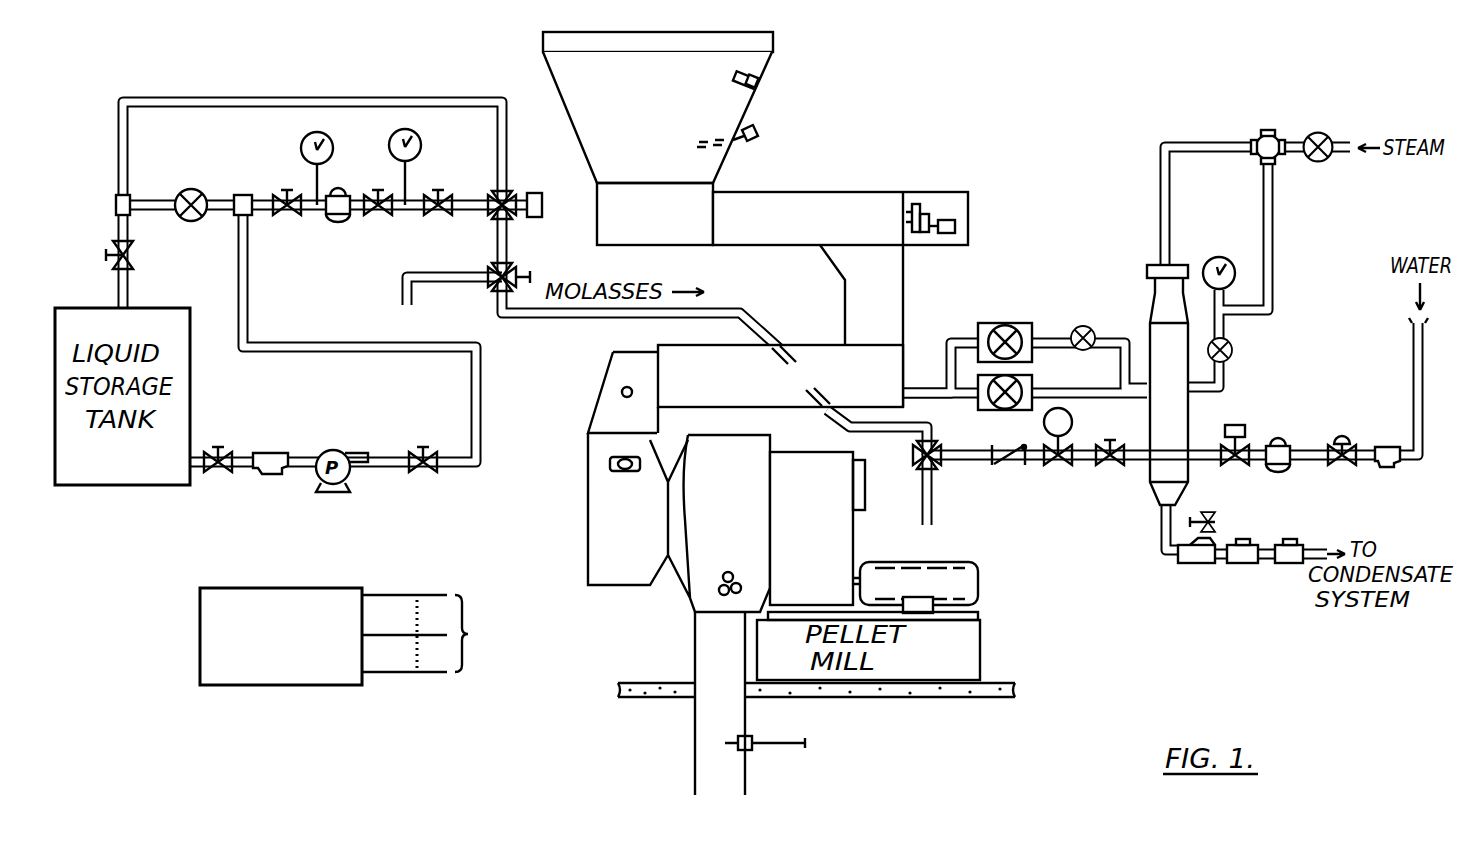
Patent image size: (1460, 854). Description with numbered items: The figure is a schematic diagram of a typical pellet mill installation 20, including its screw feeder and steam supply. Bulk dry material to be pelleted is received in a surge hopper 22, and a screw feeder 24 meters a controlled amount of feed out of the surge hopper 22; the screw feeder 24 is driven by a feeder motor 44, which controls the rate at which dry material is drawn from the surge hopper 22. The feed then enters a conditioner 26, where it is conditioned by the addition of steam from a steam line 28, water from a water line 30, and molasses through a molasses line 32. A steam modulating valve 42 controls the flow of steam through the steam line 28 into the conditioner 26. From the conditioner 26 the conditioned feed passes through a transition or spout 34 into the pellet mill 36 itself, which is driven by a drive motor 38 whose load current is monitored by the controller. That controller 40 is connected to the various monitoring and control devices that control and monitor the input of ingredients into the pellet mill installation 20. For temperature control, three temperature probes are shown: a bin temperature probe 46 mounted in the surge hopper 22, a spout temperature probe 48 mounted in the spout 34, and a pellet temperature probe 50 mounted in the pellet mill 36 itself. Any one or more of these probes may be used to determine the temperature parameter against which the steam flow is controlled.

The pellet mill installation 20 is at (906, 108).
The surge hopper 22 is at (557, 68).
The screw feeder 24 is at (873, 192).
The conditioner 26 is at (801, 345).
The steam line 28 is at (950, 337).
The water line 30 is at (888, 430).
The molasses line 32 is at (520, 318).
The spout 34 is at (598, 423).
The pellet mill 36 is at (598, 552).
The drive motor 38 is at (976, 594).
The controller 40 is at (273, 686).
The steam modulating valve 42 is at (1006, 325).
The feeder motor 44 is at (924, 212).
The bin temperature probe 46 is at (762, 134).
The spout temperature probe 48 is at (622, 387).
The pellet temperature probe 50 is at (720, 583).